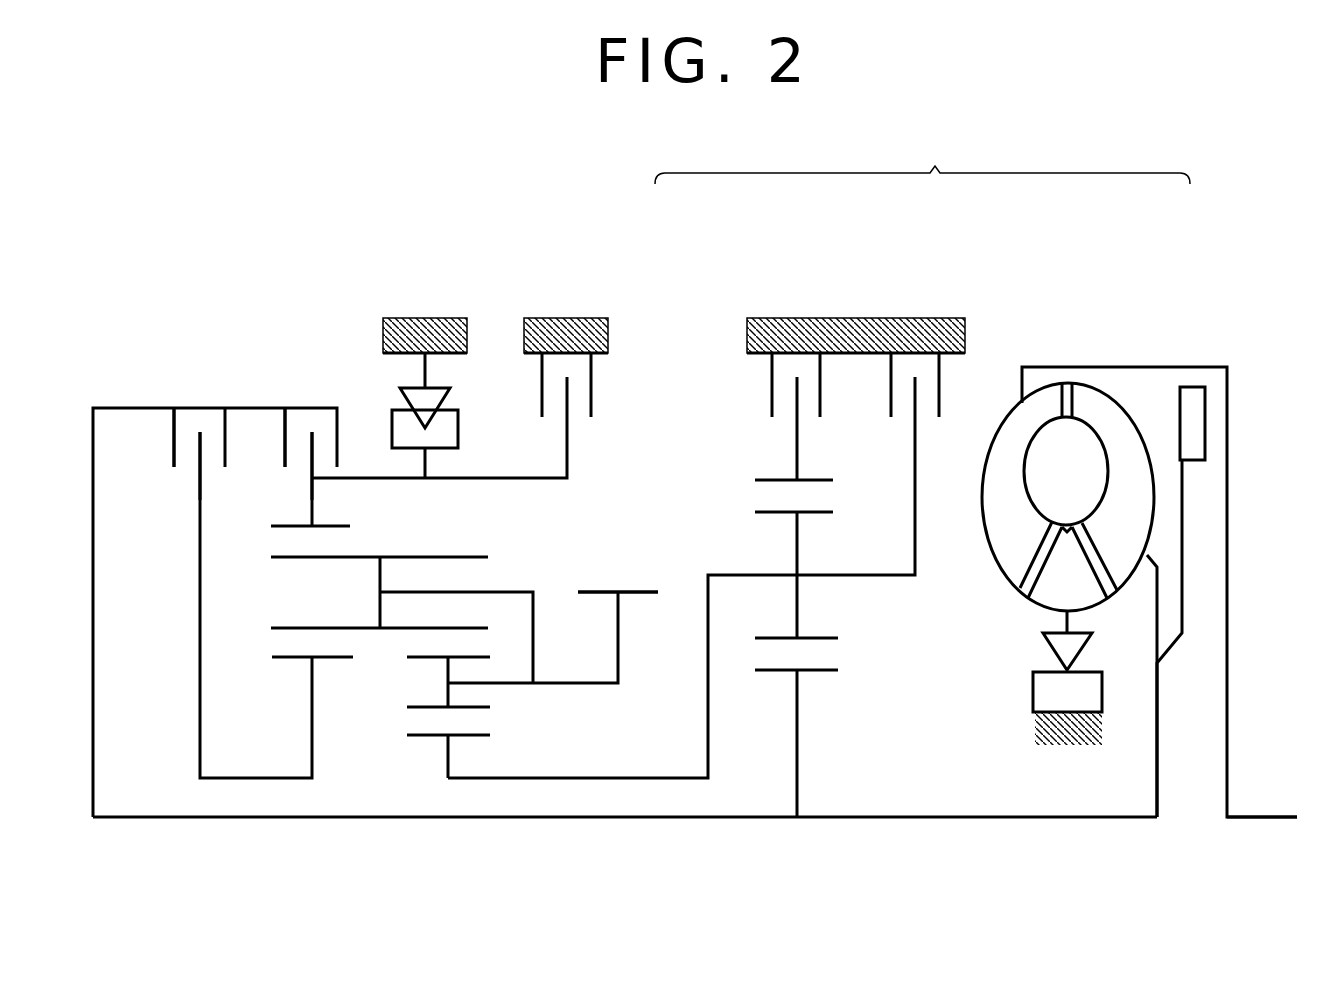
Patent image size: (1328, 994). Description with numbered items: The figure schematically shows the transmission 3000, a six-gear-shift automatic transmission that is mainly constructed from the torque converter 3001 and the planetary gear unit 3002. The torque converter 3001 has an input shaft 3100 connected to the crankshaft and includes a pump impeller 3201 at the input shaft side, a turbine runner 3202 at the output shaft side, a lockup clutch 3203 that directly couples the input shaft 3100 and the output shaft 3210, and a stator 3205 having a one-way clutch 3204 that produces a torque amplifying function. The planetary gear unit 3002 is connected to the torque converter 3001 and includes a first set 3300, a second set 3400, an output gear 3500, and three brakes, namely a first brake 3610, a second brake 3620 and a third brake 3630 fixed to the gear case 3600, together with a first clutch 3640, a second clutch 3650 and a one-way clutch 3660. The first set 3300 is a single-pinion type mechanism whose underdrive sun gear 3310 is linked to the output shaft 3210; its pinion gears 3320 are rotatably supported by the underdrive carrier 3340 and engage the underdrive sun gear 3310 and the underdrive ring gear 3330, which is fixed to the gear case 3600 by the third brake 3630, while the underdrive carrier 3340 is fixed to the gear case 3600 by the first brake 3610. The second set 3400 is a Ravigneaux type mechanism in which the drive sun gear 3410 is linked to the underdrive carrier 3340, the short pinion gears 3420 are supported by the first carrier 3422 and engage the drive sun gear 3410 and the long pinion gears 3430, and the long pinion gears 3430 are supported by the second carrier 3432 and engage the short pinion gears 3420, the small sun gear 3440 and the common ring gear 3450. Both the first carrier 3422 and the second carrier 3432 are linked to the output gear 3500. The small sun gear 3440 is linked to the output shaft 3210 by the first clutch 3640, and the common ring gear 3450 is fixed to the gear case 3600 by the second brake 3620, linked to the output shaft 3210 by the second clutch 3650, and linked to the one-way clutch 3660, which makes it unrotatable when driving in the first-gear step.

The transmission 3000 is at (922, 160).
The torque converter 3001 is at (1108, 335).
The planetary gear unit 3002 is at (662, 333).
The input shaft 3100 is at (1280, 817).
The pump impeller 3201 is at (1058, 383).
The turbine runner 3202 is at (1122, 418).
The lockup clutch 3203 is at (1207, 413).
The one-way clutch 3204 is at (1092, 640).
The stator 3205 is at (1040, 612).
The output shaft 3210 is at (942, 816).
The first set 3300 is at (800, 834).
The sun gear S(UD) 3310 is at (812, 706).
The pinion gears 3320 is at (836, 628).
The ring gear R(UD) 3330 is at (806, 478).
The carrier C(UD) 3340 is at (918, 546).
The second set 3400 is at (448, 834).
The sun gear S(D) 3410 is at (498, 733).
The short pinion gears 3420 is at (401, 666).
The carrier C(1) 3422 is at (511, 684).
The long pinion gears 3430 is at (486, 551).
The carrier C(2) 3432 is at (463, 592).
The sun gear S(S) 3440 is at (296, 663).
The ring gear R(1) (R(2)) 3450 is at (328, 511).
The output gear 3500 is at (651, 586).
The gear case 3600 is at (423, 318).
The B1 brake 3610 is at (932, 418).
The B2 brake 3620 is at (584, 420).
The B3 brake 3630 is at (764, 419).
The C1 clutch 3640 is at (166, 447).
The C2 clutch 3650 is at (271, 448).
The one-way clutch F 3660 is at (390, 390).